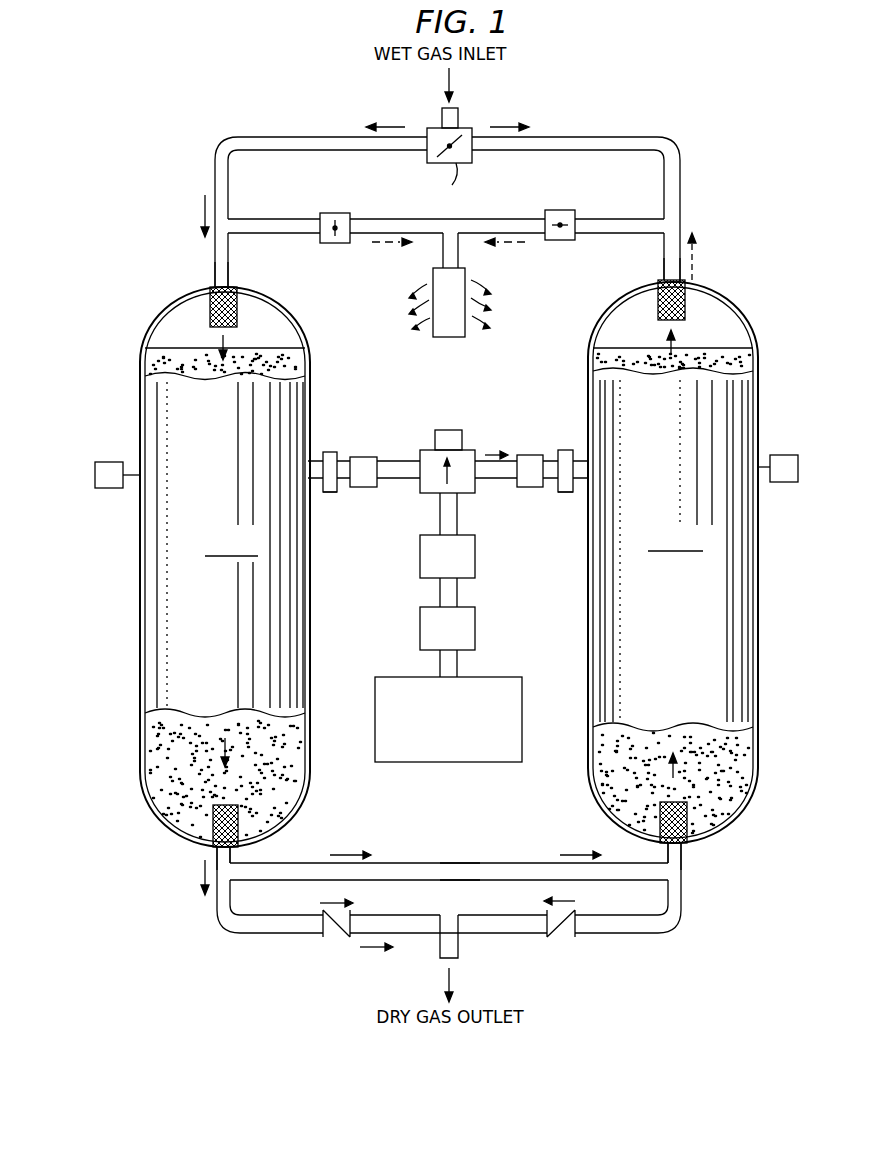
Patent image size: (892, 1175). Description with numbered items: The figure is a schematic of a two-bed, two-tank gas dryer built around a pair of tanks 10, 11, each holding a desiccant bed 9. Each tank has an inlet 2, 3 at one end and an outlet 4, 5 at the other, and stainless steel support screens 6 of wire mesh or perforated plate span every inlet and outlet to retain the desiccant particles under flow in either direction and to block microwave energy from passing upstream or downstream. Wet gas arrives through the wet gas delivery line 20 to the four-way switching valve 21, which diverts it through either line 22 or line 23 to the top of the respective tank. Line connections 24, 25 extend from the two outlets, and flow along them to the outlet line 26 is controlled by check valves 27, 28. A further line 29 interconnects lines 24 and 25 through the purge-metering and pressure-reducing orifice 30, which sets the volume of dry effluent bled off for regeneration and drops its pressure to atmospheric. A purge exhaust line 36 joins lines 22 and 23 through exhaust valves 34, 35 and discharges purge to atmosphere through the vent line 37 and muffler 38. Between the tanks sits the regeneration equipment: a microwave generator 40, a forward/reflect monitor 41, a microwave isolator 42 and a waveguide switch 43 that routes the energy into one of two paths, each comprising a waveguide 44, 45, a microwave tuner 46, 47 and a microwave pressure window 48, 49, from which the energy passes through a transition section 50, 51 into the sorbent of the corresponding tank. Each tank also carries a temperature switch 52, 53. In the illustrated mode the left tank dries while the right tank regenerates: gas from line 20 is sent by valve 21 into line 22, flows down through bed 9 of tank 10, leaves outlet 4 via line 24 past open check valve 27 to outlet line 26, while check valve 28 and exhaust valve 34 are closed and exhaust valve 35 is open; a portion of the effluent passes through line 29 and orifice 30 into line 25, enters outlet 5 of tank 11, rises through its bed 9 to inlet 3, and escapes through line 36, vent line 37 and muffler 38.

The inlet 2 is at (232, 287).
The inlet 3 is at (660, 282).
The outlet 4 is at (217, 845).
The outlet 5 is at (681, 845).
The support screen 6 is at (237, 316).
The bed 9 is at (250, 748).
The tank 10 is at (310, 575).
The tank 11 is at (758, 558).
The wet gas delivery line 20 is at (460, 122).
The four-way switching valve 21 is at (455, 165).
The line 22 is at (303, 137).
The line 23 is at (634, 137).
The line 24 is at (282, 933).
The line 25 is at (635, 933).
The outlet line 26 is at (458, 955).
The check valve 27 is at (345, 937).
The check valve 28 is at (570, 937).
The line 29 is at (408, 863).
The purge-metering and pressure-reducing orifice 30 is at (460, 863).
The exhaust valve 34 is at (338, 213).
The exhaust valve 35 is at (568, 210).
The purge exhaust line 36 is at (419, 218).
The vent line 37 is at (443, 250).
The muffler 38 is at (466, 300).
The microwave generator 40 is at (468, 762).
The forward/reflect monitor 41 is at (475, 628).
The microwave isolator 42 is at (420, 555).
The waveguide switch 43 is at (445, 430).
The waveguide 44 is at (395, 461).
The waveguide 45 is at (492, 478).
The microwave tuner 46 is at (362, 457).
The microwave tuner 47 is at (530, 455).
The microwave pressure window 48 is at (330, 452).
The microwave pressure window 49 is at (566, 492).
The transition section 50 is at (314, 492).
The transition section 51 is at (568, 450).
The temperature switch 52 is at (108, 462).
The temperature switch 53 is at (790, 455).